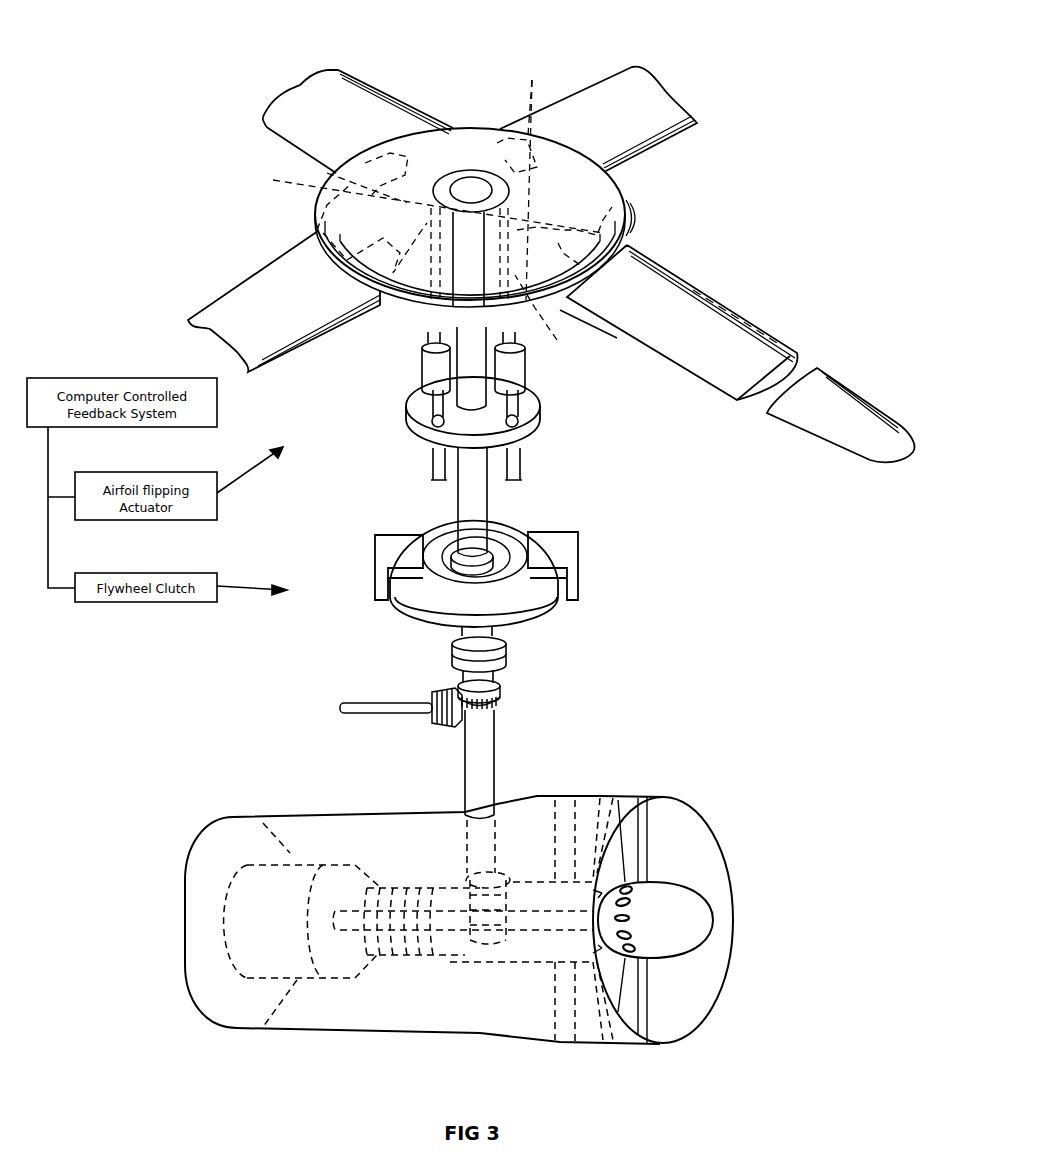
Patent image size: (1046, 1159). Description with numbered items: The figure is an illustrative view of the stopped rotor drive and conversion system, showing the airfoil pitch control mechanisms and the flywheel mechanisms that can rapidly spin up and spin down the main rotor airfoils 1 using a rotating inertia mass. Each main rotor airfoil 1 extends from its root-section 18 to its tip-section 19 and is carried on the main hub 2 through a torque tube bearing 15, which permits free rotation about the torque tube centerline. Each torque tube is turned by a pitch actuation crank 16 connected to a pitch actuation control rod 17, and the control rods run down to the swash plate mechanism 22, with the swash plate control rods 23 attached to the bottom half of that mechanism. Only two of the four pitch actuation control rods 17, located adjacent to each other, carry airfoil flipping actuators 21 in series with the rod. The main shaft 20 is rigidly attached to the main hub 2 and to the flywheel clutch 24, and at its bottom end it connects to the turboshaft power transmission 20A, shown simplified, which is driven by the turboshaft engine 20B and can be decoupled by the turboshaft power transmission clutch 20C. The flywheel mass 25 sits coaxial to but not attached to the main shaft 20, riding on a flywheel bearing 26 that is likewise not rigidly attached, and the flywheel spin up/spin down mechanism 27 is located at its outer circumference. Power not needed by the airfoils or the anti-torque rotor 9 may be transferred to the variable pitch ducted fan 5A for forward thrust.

The main rotor airfoil 1 is at (345, 97).
The main hub 2 is at (473, 140).
The variable pitch ducted fan 5A is at (617, 845).
The anti-torque rotor 9 is at (363, 700).
The torque tube bearing 15 is at (633, 203).
The pitch actuation crank 16 is at (531, 96).
The pitch actuation control rod 17 is at (578, 398).
The root-section 18 is at (617, 338).
The tip-section 19 is at (797, 355).
The main shaft 20 is at (463, 183).
The turboshaft power transmission 20A is at (520, 873).
The turboshaft engine 20B is at (357, 866).
The turboshaft power transmission clutch 20C is at (507, 650).
The airfoil flipping actuator 21 is at (528, 367).
The swash plate mechanism 22 is at (495, 428).
The swash plate control rod 23 is at (433, 452).
The flywheel clutch 24 is at (497, 568).
The flywheel mass 25 is at (417, 605).
The flywheel bearing 26 is at (450, 563).
The flywheel spin up/spin down mechanism 27 is at (387, 555).